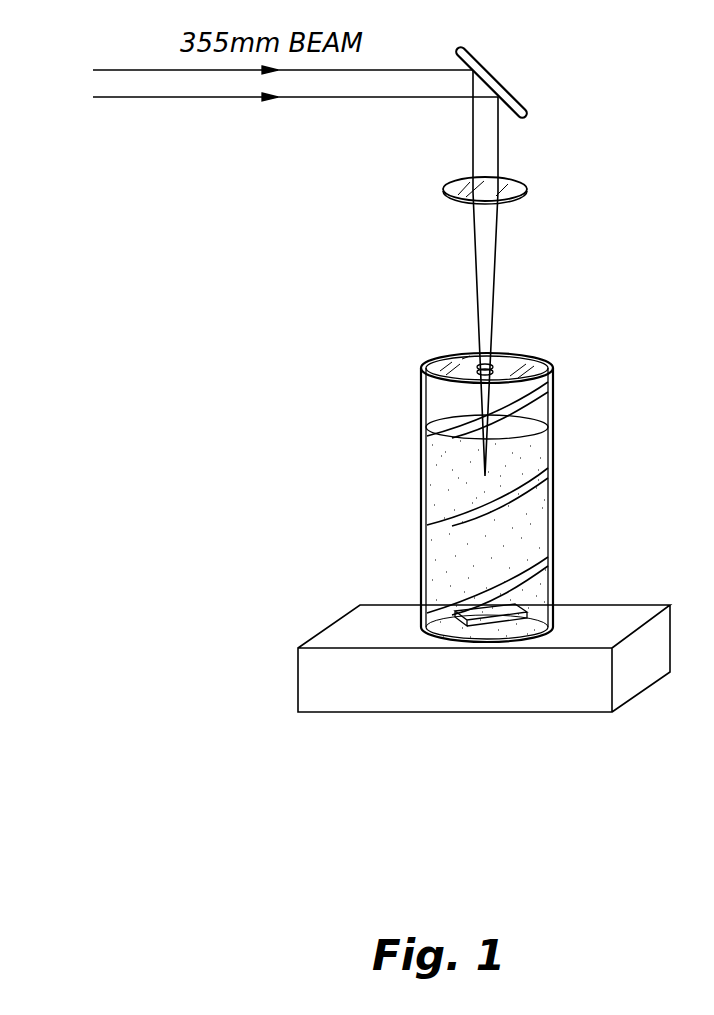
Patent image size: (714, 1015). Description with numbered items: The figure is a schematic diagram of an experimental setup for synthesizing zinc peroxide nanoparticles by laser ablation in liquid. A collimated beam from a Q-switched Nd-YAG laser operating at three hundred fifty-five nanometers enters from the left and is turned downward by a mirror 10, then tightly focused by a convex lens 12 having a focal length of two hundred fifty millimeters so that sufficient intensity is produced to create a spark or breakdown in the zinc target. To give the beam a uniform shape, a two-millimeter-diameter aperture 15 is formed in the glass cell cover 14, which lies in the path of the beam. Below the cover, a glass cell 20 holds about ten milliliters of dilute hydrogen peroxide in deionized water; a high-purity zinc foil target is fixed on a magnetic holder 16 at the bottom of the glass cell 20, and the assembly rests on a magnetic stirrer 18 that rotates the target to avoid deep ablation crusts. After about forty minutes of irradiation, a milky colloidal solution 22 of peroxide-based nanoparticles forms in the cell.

The mirror 10 is at (508, 92).
The convex lens 12 is at (528, 190).
The glass cell cover 14 is at (553, 366).
The aperture 15 is at (507, 362).
The magnetic holder 16 is at (552, 606).
The magnetic stirrer 18 is at (347, 625).
The glass cell 20 is at (420, 405).
The colloidal solution 22 is at (442, 500).